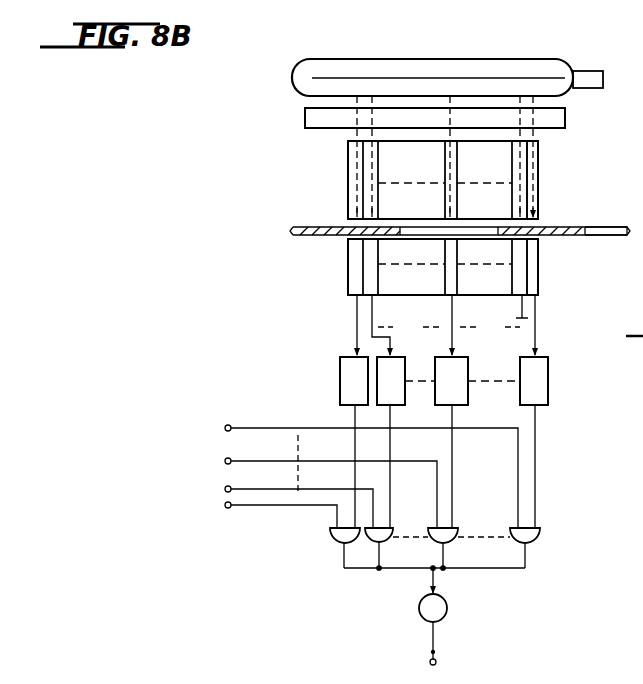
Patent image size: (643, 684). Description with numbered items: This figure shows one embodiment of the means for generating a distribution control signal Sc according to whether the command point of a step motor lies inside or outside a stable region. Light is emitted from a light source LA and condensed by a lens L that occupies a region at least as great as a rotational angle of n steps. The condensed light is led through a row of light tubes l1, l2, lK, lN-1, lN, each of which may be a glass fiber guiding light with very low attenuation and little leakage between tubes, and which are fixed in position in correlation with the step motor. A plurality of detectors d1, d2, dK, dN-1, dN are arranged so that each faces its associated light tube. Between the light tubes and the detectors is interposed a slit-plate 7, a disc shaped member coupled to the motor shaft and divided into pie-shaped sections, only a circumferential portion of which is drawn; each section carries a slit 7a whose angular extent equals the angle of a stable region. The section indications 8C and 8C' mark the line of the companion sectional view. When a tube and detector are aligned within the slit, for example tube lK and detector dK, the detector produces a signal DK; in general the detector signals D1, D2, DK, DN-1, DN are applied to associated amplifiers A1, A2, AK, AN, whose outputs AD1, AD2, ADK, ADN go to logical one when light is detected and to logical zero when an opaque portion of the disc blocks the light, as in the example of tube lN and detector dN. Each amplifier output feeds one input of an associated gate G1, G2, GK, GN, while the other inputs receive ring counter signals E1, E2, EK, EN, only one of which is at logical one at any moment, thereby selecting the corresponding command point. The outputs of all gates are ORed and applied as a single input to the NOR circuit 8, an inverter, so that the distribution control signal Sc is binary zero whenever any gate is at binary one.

The section line 8C is at (287, 151).
The section line 8C' is at (285, 276).
The light source LA is at (560, 60).
The lens L is at (570, 118).
The light tube l1 is at (346, 165).
The light tube l2 is at (378, 165).
The light tube lK is at (458, 170).
The light tube lN-1 is at (514, 205).
The light tube lN is at (540, 181).
The slit-plate 7 is at (558, 218).
The slit 7a is at (596, 239).
The detector d1 is at (347, 273).
The detector d2 is at (380, 281).
The detector dK is at (462, 254).
The detector dN-1 is at (513, 282).
The detector dN is at (540, 283).
The detector signal D1 is at (352, 315).
The detector signal D2 is at (374, 312).
The detector signal DK is at (450, 314).
The detector signal DN-1 is at (520, 312).
The detector signal DN is at (538, 317).
The amplifier A1 is at (354, 381).
The amplifier A2 is at (391, 381).
The amplifier AK is at (451, 381).
The amplifier AN is at (534, 381).
The amplifier output signal AD1 is at (352, 411).
The amplifier output signal AD2 is at (390, 418).
The amplifier output signal ADK is at (455, 418).
The amplifier output signal ADN is at (538, 422).
The ring counter signal EN is at (283, 410).
The ring counter signal EK is at (283, 444).
The ring counter signal E2 is at (280, 488).
The ring counter signal E1 is at (278, 506).
The gate G1 is at (330, 539).
The gate G2 is at (371, 548).
The gate GK is at (428, 540).
The gate GN is at (512, 540).
The NOR circuit 8 is at (448, 606).
The distribution control signal Sc is at (433, 642).